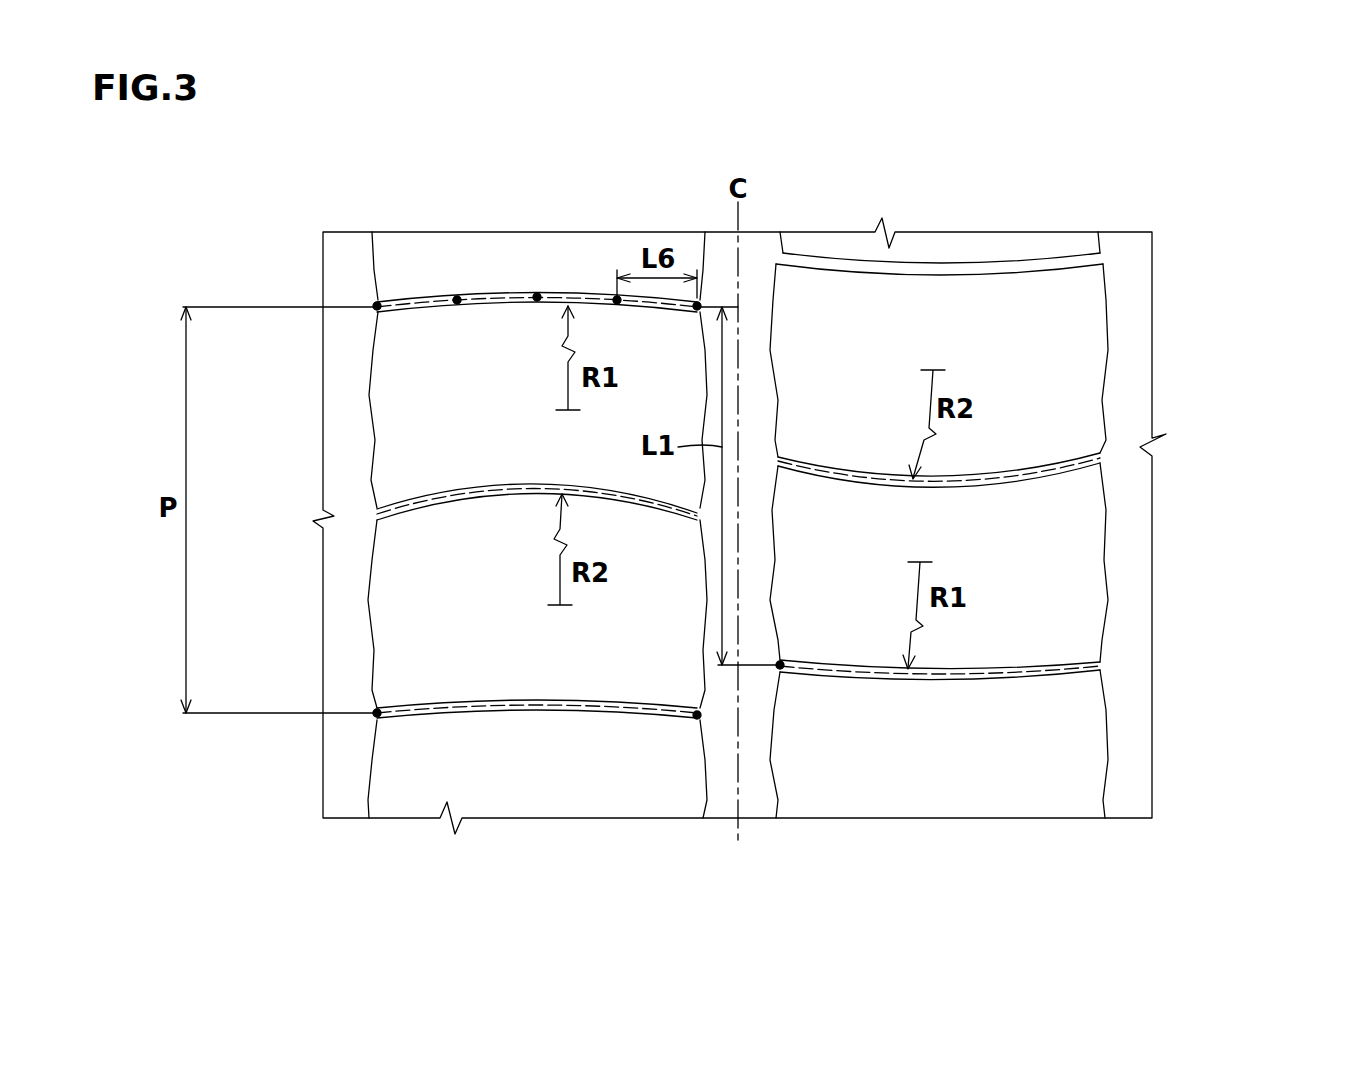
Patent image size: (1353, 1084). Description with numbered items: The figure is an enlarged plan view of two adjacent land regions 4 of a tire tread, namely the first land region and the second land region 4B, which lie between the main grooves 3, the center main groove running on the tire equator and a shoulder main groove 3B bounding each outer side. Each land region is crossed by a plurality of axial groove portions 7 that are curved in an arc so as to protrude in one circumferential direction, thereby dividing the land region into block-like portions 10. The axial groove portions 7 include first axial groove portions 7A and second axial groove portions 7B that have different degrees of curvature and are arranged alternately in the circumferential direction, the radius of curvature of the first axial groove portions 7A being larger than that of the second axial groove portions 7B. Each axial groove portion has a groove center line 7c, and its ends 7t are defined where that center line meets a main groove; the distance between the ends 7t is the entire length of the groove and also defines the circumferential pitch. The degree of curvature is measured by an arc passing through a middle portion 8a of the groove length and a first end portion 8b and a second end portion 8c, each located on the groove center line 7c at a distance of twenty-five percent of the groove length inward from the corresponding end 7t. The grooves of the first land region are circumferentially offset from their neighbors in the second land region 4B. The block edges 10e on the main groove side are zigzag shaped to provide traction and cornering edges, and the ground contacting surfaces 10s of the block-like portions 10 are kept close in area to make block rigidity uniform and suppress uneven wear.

The main grooves 3 is at (753, 275).
The shoulder main grooves 3B is at (346, 262).
The land regions 4 is at (555, 770).
The second land region 4B is at (940, 770).
The axial groove portions 7 is at (742, 515).
The first axial groove portions 7A is at (417, 300).
The second axial groove portions 7B is at (448, 507).
The groove center line 7c is at (448, 312).
The ends 7t is at (698, 303).
The middle portion 8a is at (537, 294).
The first end portion 8b is at (457, 297).
The second end portion 8c is at (617, 297).
The block-like portions 10 is at (979, 310).
The ground contacting surfaces 10s is at (1040, 776).
The block edges 10e is at (779, 790).